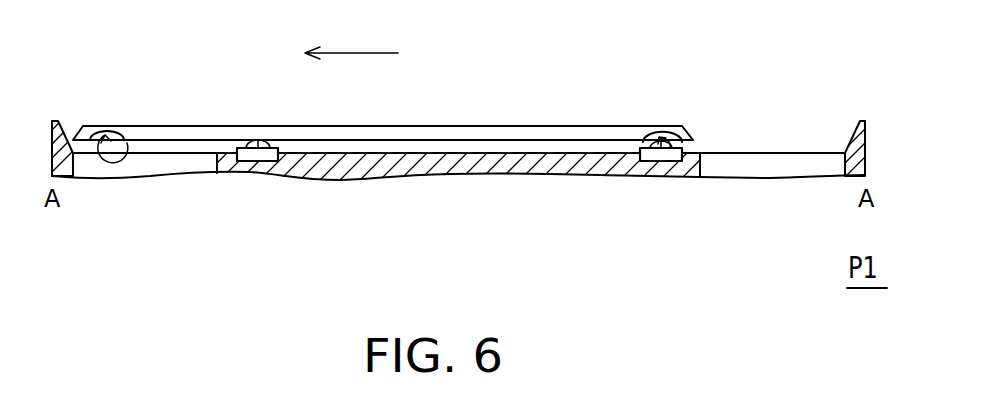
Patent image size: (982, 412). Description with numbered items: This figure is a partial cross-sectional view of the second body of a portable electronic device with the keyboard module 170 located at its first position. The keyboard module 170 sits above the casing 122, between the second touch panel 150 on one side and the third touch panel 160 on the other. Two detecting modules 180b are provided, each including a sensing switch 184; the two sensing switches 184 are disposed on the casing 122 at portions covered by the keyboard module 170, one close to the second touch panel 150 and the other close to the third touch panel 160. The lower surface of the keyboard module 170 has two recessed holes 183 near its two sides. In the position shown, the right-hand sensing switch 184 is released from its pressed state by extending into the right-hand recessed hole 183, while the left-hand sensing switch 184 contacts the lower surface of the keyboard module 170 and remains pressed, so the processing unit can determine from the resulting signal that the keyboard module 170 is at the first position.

The casing 122 is at (403, 165).
The second touch panel 150 is at (153, 167).
The third touch panel 160 is at (763, 167).
The keyboard module 170 is at (468, 133).
The recessed hole 183 is at (130, 152).
The sensing switch 184 is at (253, 152).
The detecting module 180b is at (778, 65).